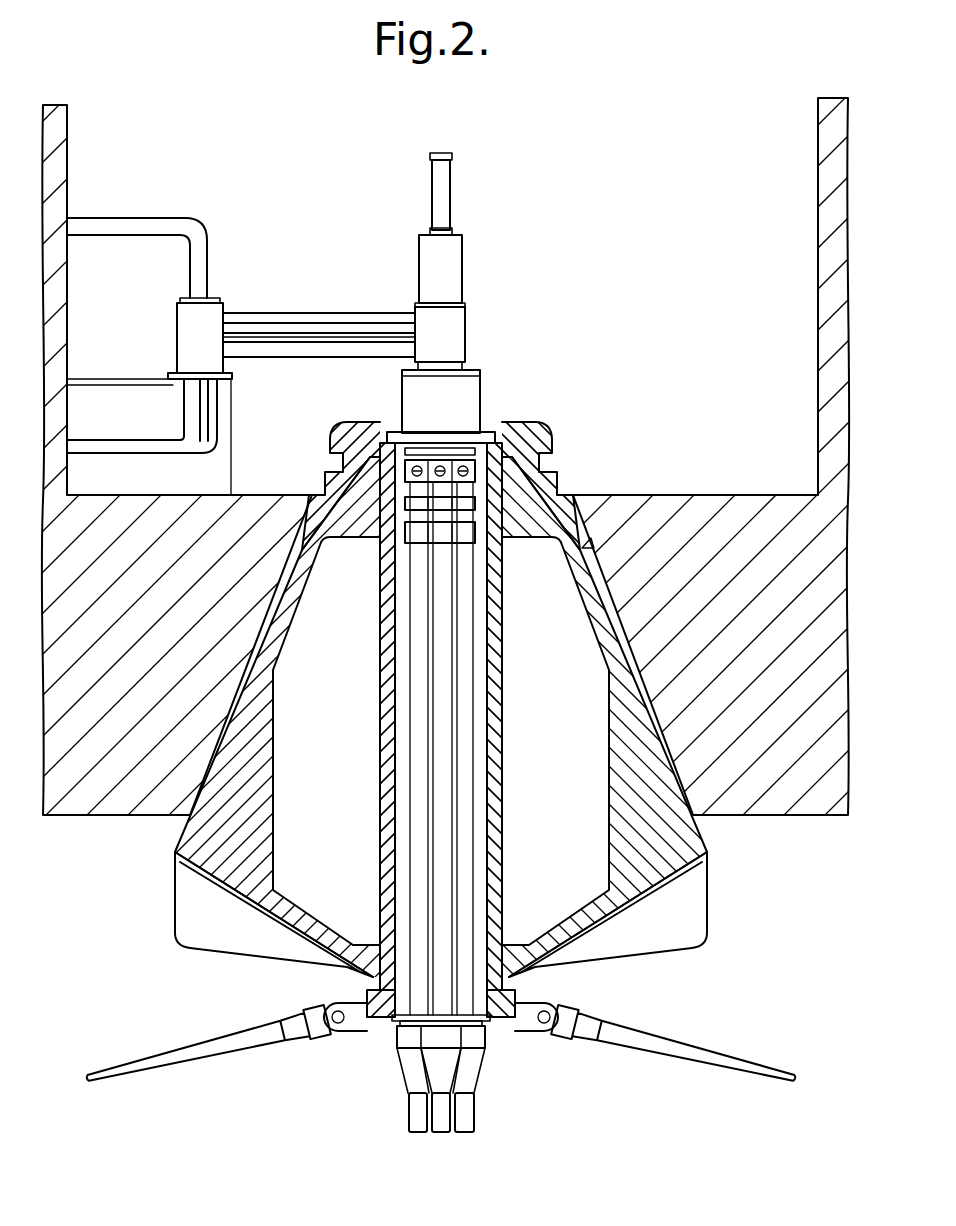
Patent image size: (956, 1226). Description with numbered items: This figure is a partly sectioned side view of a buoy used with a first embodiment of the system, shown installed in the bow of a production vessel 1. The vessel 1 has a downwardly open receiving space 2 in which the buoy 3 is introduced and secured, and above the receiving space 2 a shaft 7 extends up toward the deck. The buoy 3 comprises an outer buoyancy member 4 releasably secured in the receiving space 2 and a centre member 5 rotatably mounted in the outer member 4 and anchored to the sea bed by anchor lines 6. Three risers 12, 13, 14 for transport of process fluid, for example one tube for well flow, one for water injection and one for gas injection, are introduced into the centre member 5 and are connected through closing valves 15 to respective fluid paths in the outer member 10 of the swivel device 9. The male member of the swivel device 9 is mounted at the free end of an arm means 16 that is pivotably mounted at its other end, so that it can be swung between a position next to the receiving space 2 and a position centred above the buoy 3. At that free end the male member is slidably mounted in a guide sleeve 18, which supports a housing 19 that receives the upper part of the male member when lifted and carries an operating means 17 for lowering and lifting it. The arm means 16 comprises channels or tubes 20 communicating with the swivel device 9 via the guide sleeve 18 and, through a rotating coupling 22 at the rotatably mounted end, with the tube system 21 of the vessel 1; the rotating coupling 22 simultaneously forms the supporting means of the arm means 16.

The vessel 1 is at (797, 815).
The receiving space 2 is at (592, 540).
The buoy 3 is at (176, 911).
The outer buoyancy member 4 is at (627, 702).
The centre member 5 is at (503, 827).
The anchor lines 6 is at (138, 1068).
The shaft 7 is at (681, 186).
The swivel device 9 is at (480, 361).
The outer member 10 is at (470, 400).
The riser 12 is at (414, 1114).
The riser 13 is at (447, 1120).
The riser 14 is at (470, 1115).
The closing valves 15 is at (405, 525).
The arm means 16 is at (329, 310).
The operating means 17 is at (446, 200).
The guide sleeve 18 is at (450, 325).
The housing 19 is at (448, 271).
The channels 20 is at (320, 350).
The tube system 21 is at (130, 218).
The rotating coupling 22 is at (177, 330).